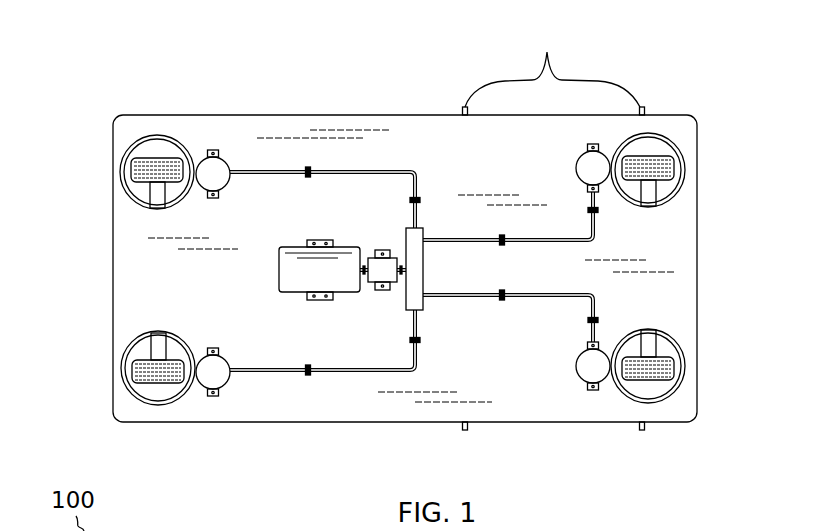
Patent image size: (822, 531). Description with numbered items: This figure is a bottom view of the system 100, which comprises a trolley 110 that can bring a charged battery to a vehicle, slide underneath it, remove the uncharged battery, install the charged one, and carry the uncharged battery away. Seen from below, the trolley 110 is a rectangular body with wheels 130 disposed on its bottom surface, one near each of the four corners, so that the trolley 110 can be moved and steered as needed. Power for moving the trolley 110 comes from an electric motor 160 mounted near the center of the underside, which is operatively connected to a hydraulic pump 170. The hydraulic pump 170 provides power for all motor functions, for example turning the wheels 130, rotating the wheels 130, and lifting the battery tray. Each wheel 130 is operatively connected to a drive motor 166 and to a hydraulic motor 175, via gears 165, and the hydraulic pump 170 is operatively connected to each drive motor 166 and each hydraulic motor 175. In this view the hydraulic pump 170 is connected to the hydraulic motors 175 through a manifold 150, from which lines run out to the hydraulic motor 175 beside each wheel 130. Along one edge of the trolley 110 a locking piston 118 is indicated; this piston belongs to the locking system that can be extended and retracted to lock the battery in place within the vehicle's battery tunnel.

The system 100 is at (405, 245).
The trolley 110 is at (255, 130).
The locking piston 118 is at (554, 67).
The wheels 130 is at (133, 363).
The manifold 150 is at (415, 235).
The electric motor 160 is at (342, 285).
The gears 165 is at (421, 273).
The drive motor 166 is at (650, 340).
The hydraulic pump 170 is at (377, 267).
The hydraulic motor 175 is at (218, 150).